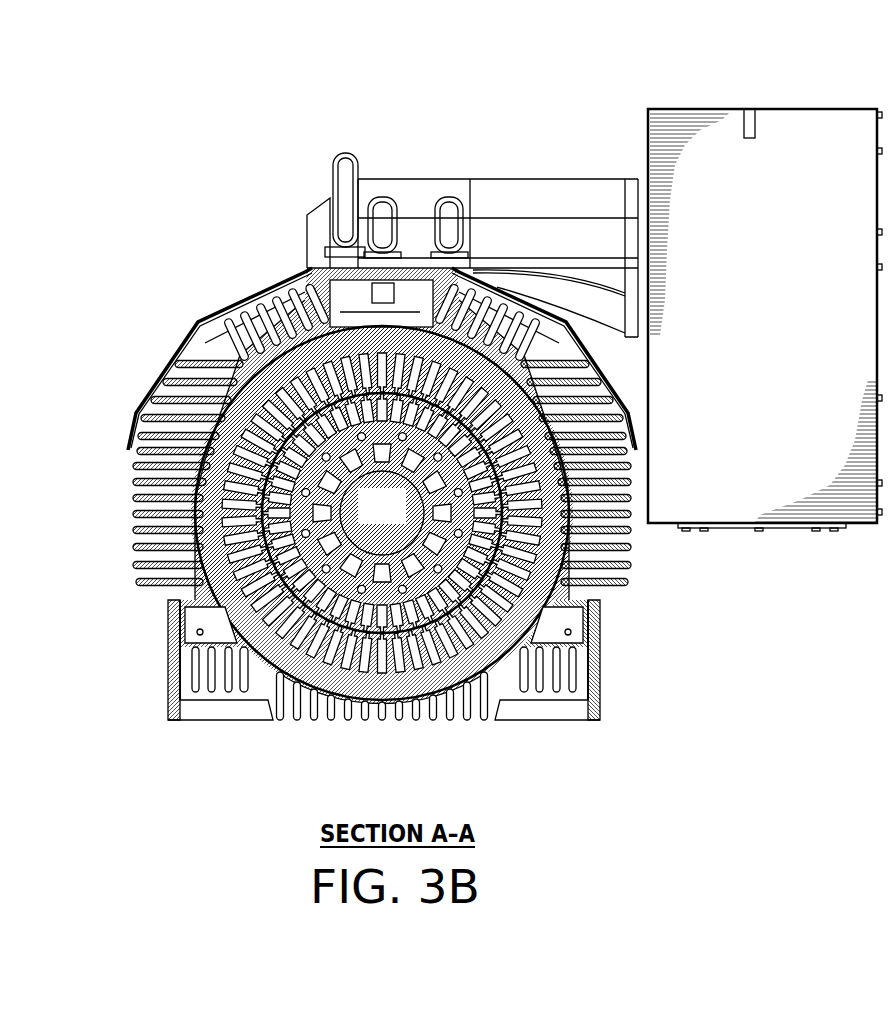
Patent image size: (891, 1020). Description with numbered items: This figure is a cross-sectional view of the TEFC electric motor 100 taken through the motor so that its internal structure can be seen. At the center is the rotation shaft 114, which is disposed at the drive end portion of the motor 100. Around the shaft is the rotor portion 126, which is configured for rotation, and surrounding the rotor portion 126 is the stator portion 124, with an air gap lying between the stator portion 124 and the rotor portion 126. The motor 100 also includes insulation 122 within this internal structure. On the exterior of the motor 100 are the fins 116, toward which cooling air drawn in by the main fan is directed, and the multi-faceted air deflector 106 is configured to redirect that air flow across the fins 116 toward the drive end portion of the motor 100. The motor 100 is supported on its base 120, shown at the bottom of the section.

The electric motor 100 is at (533, 146).
The multi-faceted air deflector 106 is at (165, 364).
The rotation shaft 114 is at (400, 520).
The fins 116 is at (624, 548).
The base 120 is at (545, 722).
The insulation 122 is at (338, 690).
The stator portion 124 is at (222, 545).
The rotor portion 126 is at (275, 494).